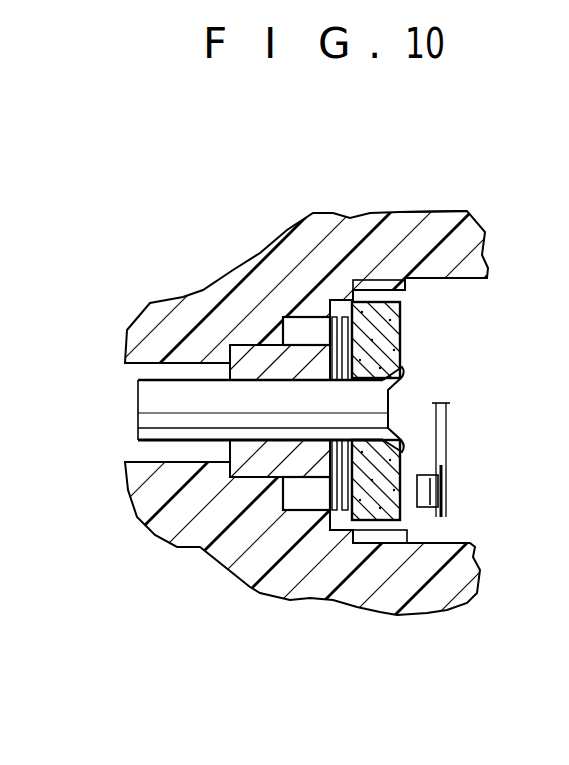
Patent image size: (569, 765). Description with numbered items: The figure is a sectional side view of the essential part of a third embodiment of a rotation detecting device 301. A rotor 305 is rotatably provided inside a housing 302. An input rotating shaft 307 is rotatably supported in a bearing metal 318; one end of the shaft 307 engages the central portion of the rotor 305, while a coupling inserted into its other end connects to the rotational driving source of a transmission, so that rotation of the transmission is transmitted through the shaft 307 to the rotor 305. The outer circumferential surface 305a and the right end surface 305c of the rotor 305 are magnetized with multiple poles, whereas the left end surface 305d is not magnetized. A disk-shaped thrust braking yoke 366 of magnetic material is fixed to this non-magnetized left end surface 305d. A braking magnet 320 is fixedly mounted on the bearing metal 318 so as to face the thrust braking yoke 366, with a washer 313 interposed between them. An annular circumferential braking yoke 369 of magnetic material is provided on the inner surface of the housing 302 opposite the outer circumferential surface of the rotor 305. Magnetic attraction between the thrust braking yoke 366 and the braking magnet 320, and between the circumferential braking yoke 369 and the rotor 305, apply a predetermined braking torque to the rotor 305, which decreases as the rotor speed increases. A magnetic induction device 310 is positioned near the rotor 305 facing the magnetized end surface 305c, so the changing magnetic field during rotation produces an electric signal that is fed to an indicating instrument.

The rotation detecting device 301 is at (355, 205).
The housing 302 is at (328, 198).
The rotor 305 is at (416, 318).
The outer circumferential surface 305a is at (380, 532).
The right end surface 305c is at (403, 340).
The left end surface 305d is at (355, 522).
The input rotating shaft 307 is at (150, 420).
The magnetic induction device 310 is at (430, 495).
The washer 313 is at (332, 310).
The bearing metal 318 is at (245, 468).
The braking magnet 320 is at (297, 315).
The thrust braking yoke 366 is at (340, 300).
The circumferential braking yoke 369 is at (462, 200).